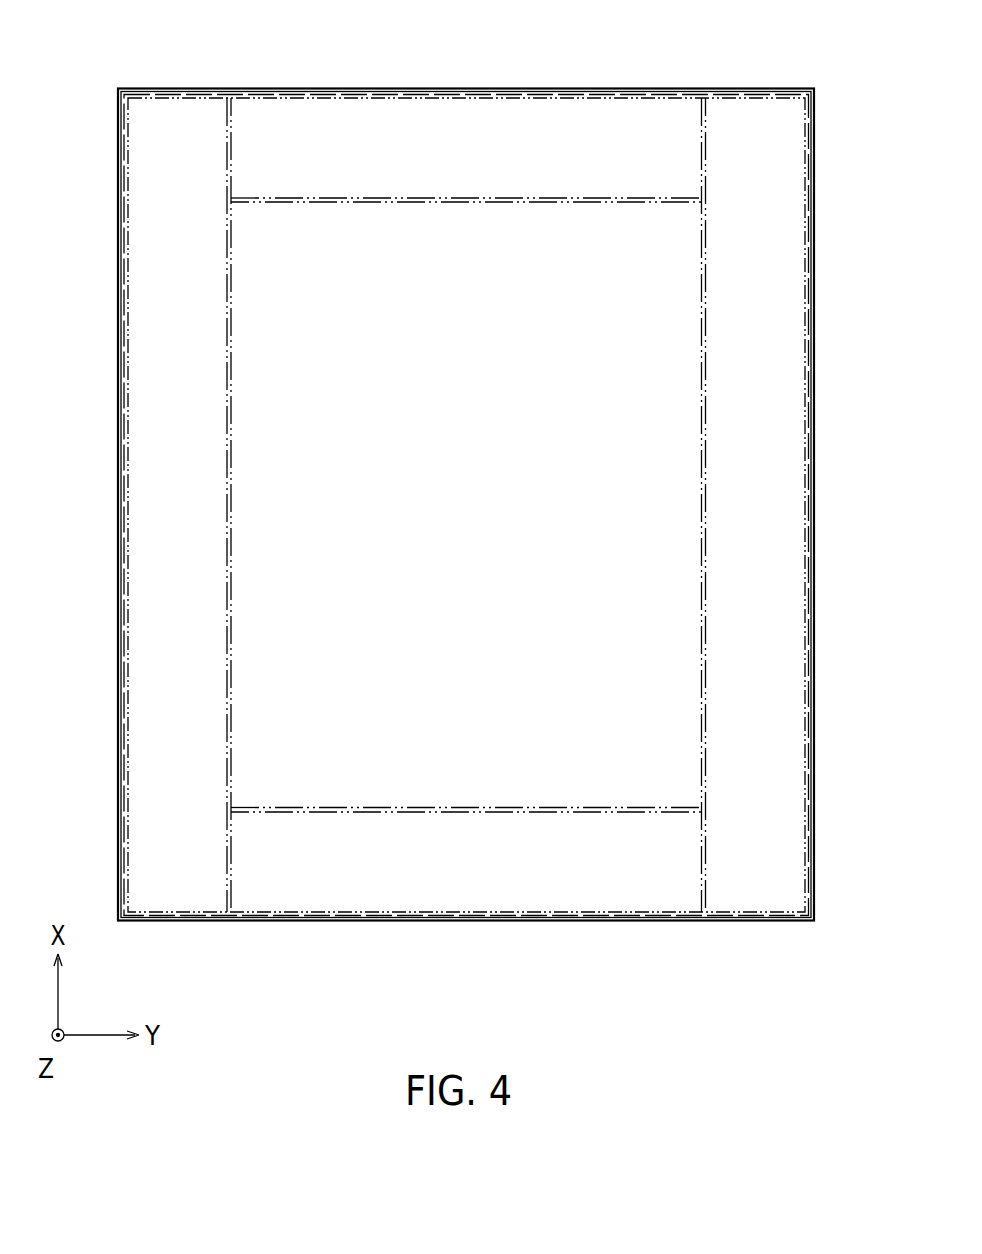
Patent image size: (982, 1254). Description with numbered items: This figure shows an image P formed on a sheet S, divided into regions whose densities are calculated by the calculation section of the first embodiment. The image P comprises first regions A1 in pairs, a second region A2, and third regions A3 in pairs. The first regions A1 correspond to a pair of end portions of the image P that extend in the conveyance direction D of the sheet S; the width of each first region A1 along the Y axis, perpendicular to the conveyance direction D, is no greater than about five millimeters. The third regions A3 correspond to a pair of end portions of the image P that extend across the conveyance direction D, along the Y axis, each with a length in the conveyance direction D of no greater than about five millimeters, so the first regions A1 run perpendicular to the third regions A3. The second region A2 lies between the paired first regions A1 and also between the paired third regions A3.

The sheet S is at (176, 88).
The image P is at (357, 91).
The first regions A1 is at (130, 155).
The second region A2 is at (700, 311).
The third regions A3 is at (614, 97).
The conveyance direction D is at (858, 876).